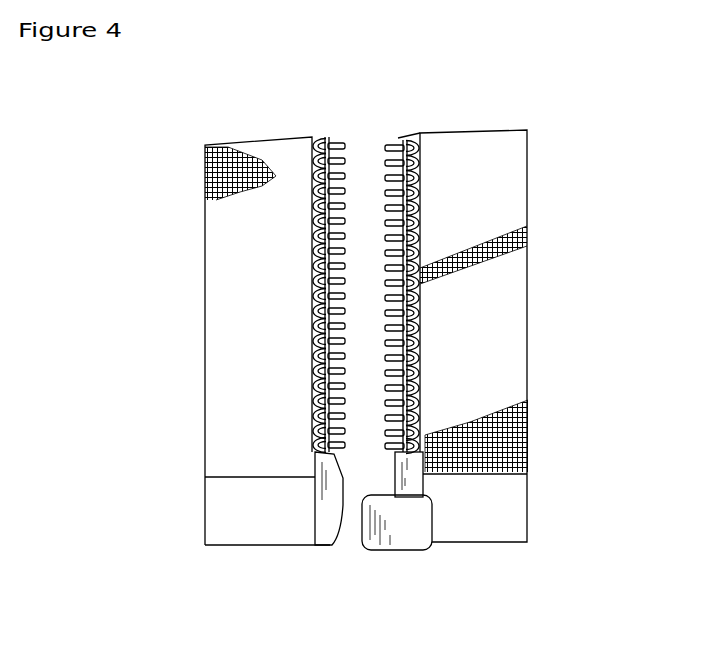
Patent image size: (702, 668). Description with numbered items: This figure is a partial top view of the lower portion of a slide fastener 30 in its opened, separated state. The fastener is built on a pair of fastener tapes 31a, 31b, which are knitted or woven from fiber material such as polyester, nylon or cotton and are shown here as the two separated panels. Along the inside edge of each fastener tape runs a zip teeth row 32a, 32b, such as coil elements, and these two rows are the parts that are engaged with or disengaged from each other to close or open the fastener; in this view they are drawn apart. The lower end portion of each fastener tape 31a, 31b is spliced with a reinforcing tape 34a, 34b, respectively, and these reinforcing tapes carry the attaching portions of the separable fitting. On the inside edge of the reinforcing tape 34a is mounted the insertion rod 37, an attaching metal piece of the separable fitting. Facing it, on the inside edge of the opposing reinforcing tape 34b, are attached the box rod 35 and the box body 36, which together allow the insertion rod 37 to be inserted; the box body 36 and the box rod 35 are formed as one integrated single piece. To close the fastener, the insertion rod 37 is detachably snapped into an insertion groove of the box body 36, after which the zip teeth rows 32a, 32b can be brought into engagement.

The slide fastener 30 is at (535, 152).
The fastener tape 31a is at (212, 240).
The fastener tape 31b is at (512, 298).
The zip teeth row 32a is at (340, 137).
The zip teeth row 32b is at (386, 140).
The reinforcing tape 34a is at (226, 510).
The reinforcing tape 34b is at (512, 505).
The box rod 35 is at (428, 447).
The box body 36 is at (405, 545).
The insertion rod 37 is at (327, 547).